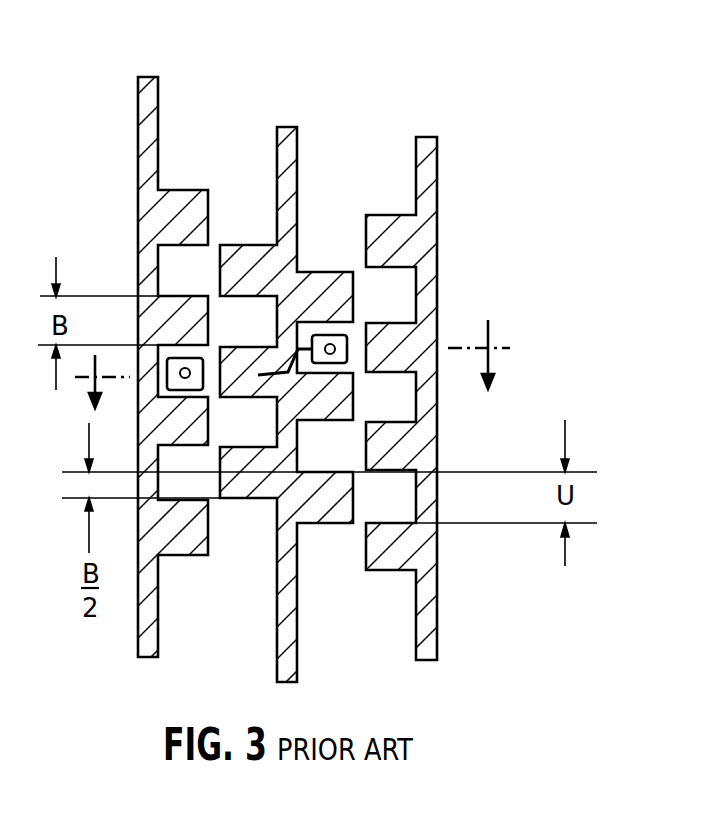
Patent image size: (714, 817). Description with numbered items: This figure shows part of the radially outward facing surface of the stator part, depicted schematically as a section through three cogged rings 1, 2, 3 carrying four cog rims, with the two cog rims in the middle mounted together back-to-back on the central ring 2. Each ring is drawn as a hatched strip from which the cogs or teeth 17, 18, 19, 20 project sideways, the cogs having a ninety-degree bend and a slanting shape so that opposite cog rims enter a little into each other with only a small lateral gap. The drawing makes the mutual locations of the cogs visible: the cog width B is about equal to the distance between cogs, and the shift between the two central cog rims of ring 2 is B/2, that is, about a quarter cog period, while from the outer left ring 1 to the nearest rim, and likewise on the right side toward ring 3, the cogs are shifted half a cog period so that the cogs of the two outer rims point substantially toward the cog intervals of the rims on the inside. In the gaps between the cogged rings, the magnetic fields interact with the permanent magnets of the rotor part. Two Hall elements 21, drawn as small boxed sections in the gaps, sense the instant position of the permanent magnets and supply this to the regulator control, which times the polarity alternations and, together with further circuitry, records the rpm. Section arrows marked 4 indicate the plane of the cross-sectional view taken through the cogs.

The cogged ring 1 is at (150, 102).
The cogged ring 2 is at (283, 148).
The cogged ring 3 is at (423, 152).
The section line of FIG. 4 is at (292, 366).
The cog 17 is at (160, 208).
The cog 18 is at (257, 252).
The cog 19 is at (312, 278).
The cog 20 is at (425, 230).
The Hall element 21 is at (192, 390).